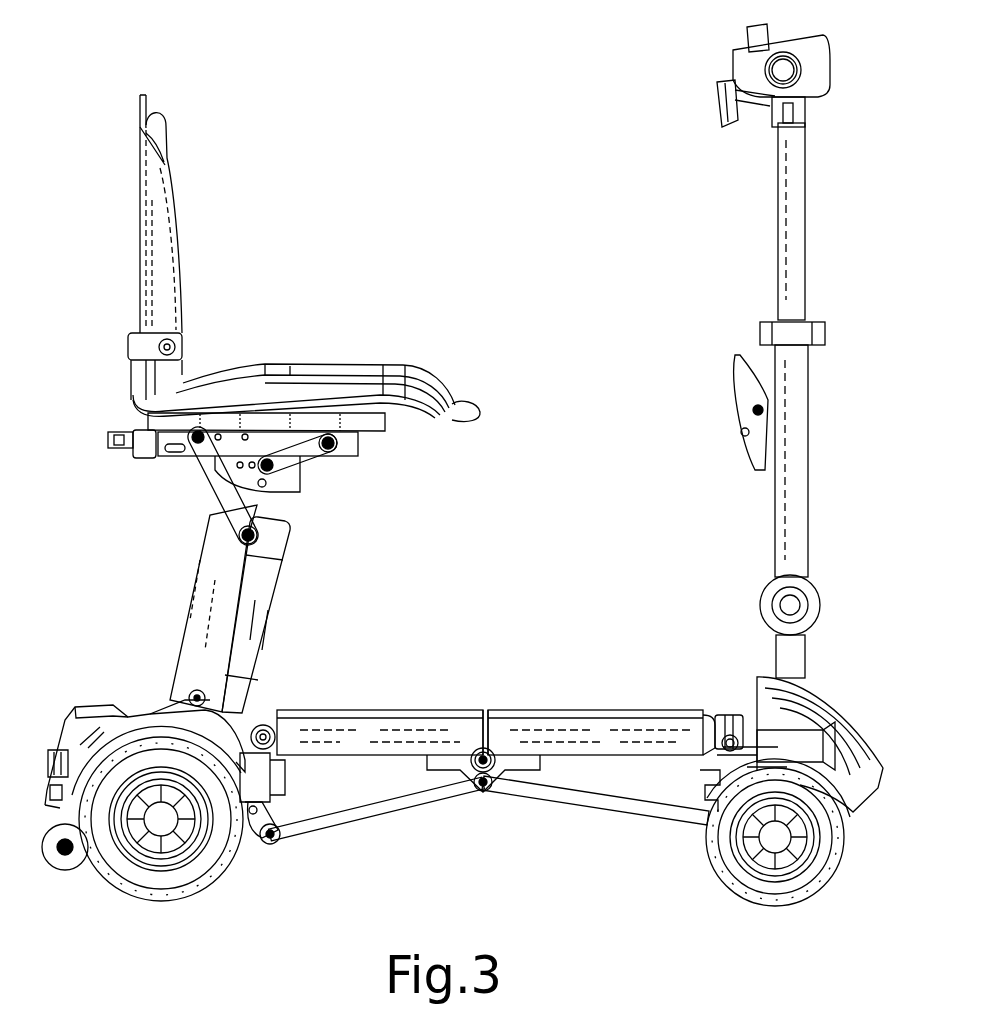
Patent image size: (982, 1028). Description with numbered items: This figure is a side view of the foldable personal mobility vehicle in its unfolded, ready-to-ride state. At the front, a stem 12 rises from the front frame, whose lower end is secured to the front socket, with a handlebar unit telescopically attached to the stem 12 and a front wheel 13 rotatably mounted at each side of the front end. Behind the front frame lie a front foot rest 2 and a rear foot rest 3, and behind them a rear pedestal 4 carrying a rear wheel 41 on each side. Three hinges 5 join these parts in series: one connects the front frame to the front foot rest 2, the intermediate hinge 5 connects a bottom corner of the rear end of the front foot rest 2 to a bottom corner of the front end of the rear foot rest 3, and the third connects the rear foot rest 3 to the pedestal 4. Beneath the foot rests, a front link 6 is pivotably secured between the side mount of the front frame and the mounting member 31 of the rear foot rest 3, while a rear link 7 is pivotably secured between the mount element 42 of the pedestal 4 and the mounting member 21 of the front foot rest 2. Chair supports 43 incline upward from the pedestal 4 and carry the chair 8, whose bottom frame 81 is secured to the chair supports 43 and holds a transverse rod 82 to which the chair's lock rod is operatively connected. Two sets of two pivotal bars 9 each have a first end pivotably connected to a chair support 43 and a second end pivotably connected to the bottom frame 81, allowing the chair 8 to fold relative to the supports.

The front foot rest 2 is at (630, 732).
The rear foot rest 3 is at (373, 725).
The rear pedestal 4 is at (258, 792).
The hinge 5 is at (265, 722).
The front link 6 is at (625, 805).
The rear link 7 is at (350, 818).
The chair 8 is at (327, 362).
The pivotal bar 9 is at (215, 478).
The stem 12 is at (800, 515).
The front wheel 13 is at (773, 888).
The mounting member 21 is at (503, 768).
The mounting member 31 is at (462, 772).
The rear wheel 41 is at (158, 878).
The mount element 42 is at (252, 822).
The chair support 43 is at (195, 640).
The bottom frame 81 is at (344, 455).
The transverse rod 82 is at (185, 452).